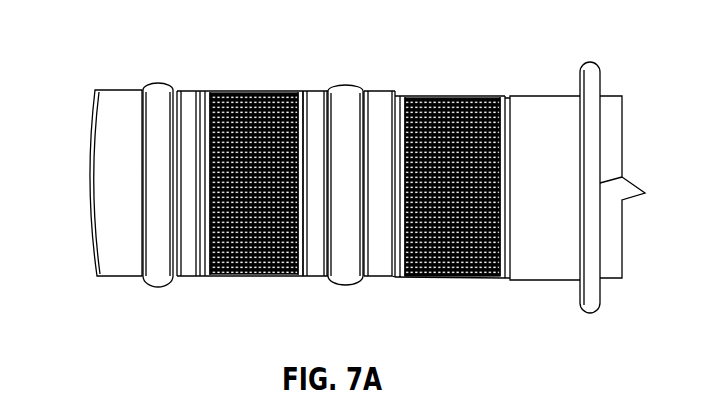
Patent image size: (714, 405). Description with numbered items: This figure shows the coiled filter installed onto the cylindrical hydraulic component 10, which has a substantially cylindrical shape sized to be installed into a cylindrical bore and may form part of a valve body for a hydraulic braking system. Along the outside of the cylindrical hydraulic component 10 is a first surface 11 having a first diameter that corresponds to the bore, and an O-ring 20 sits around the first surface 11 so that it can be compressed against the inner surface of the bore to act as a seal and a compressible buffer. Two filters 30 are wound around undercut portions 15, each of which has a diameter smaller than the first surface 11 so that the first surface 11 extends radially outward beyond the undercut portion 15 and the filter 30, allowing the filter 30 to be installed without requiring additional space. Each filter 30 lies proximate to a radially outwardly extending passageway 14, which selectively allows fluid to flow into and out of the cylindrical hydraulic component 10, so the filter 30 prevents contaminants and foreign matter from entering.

The cylindrical hydraulic component 10 is at (96, 79).
The first surface 11 is at (190, 90).
The radially outwardly extending passageway 14 is at (445, 195).
The undercut portion 15 is at (403, 100).
The O-ring 20 is at (348, 95).
The coiled filter 30 is at (252, 108).